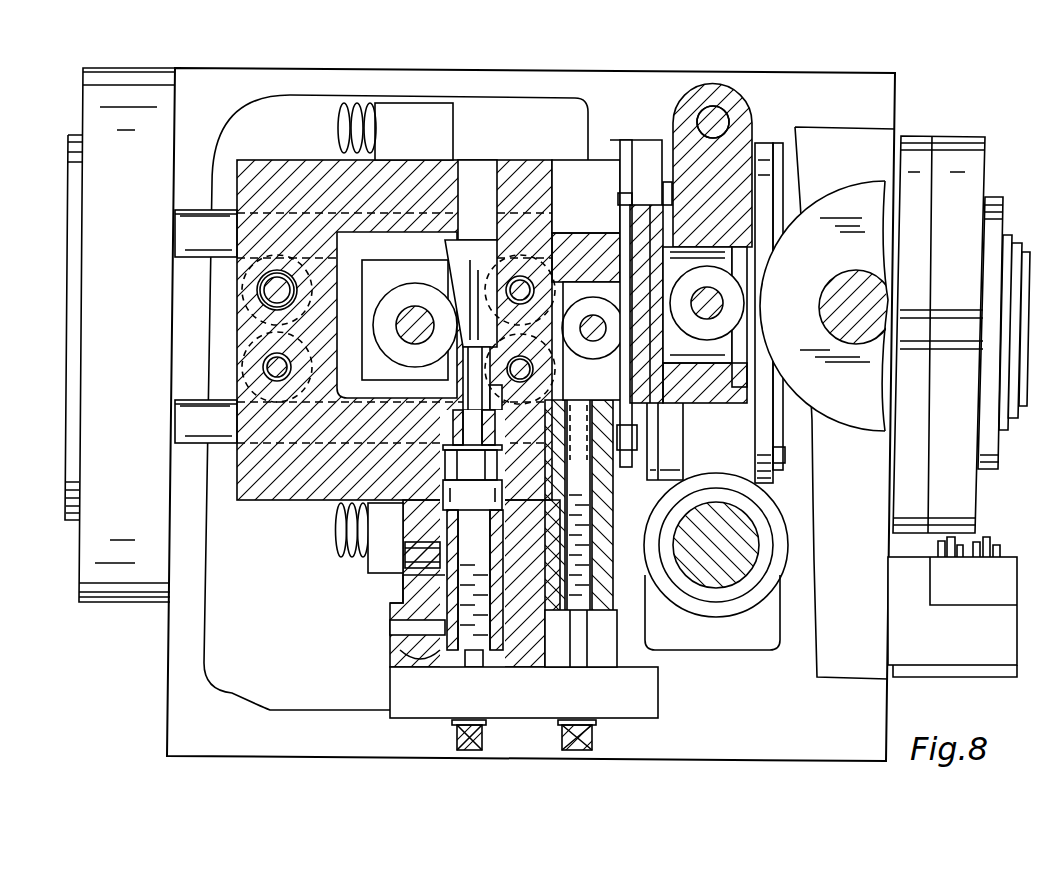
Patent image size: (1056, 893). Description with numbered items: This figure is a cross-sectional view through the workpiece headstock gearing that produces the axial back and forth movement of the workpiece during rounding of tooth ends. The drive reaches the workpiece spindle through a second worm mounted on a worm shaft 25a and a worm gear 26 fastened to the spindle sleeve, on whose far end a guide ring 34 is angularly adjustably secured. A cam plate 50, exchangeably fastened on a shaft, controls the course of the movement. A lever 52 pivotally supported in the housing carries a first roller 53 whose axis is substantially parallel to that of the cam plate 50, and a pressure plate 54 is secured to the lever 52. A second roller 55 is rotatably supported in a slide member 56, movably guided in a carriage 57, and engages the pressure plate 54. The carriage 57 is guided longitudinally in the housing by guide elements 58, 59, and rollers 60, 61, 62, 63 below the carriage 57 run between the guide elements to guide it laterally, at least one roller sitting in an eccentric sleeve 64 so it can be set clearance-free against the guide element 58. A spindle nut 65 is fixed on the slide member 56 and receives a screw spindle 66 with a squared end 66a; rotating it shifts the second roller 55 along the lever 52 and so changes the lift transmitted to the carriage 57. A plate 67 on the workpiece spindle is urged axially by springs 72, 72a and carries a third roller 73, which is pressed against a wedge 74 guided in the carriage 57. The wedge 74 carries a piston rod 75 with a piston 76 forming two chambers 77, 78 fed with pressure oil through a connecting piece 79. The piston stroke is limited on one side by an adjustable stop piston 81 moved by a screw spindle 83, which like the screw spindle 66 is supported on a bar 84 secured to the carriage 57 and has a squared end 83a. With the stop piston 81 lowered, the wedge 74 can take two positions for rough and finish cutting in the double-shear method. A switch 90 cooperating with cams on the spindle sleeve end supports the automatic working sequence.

The worm shaft 25a is at (730, 575).
The worm gear 26 is at (772, 438).
The guide ring 34 is at (978, 172).
The cam plate 50 is at (826, 268).
The lever 52 is at (743, 137).
The first roller 53 is at (737, 308).
The pressure plate 54 is at (685, 110).
The second roller 55 is at (608, 348).
The slide member 56 is at (580, 250).
The carriage 57 is at (537, 182).
The guide element 58 is at (175, 222).
The guide element 59 is at (178, 432).
The roller 60 is at (257, 287).
The roller 61 is at (523, 286).
The roller 62 is at (265, 366).
The roller 63 is at (521, 358).
The eccentric sleeve 64 is at (260, 302).
The spindle nut 65 is at (598, 612).
The screw spindle 66 is at (580, 640).
The squared end 66a is at (596, 738).
The plate 67 is at (385, 366).
The spring 72 is at (352, 103).
The spring 72a is at (352, 560).
The third roller 73 is at (394, 302).
The wedge 74 is at (466, 256).
The piston rod 75 is at (470, 436).
The piston 76 is at (448, 492).
The chamber 77 is at (497, 472).
The chamber 78 is at (503, 527).
The connecting piece 79 is at (405, 575).
The stop piston 81 is at (455, 602).
The screw spindle 83 is at (445, 650).
The squared end 83a is at (457, 738).
The bar 84 is at (524, 704).
The switch 90 is at (997, 568).